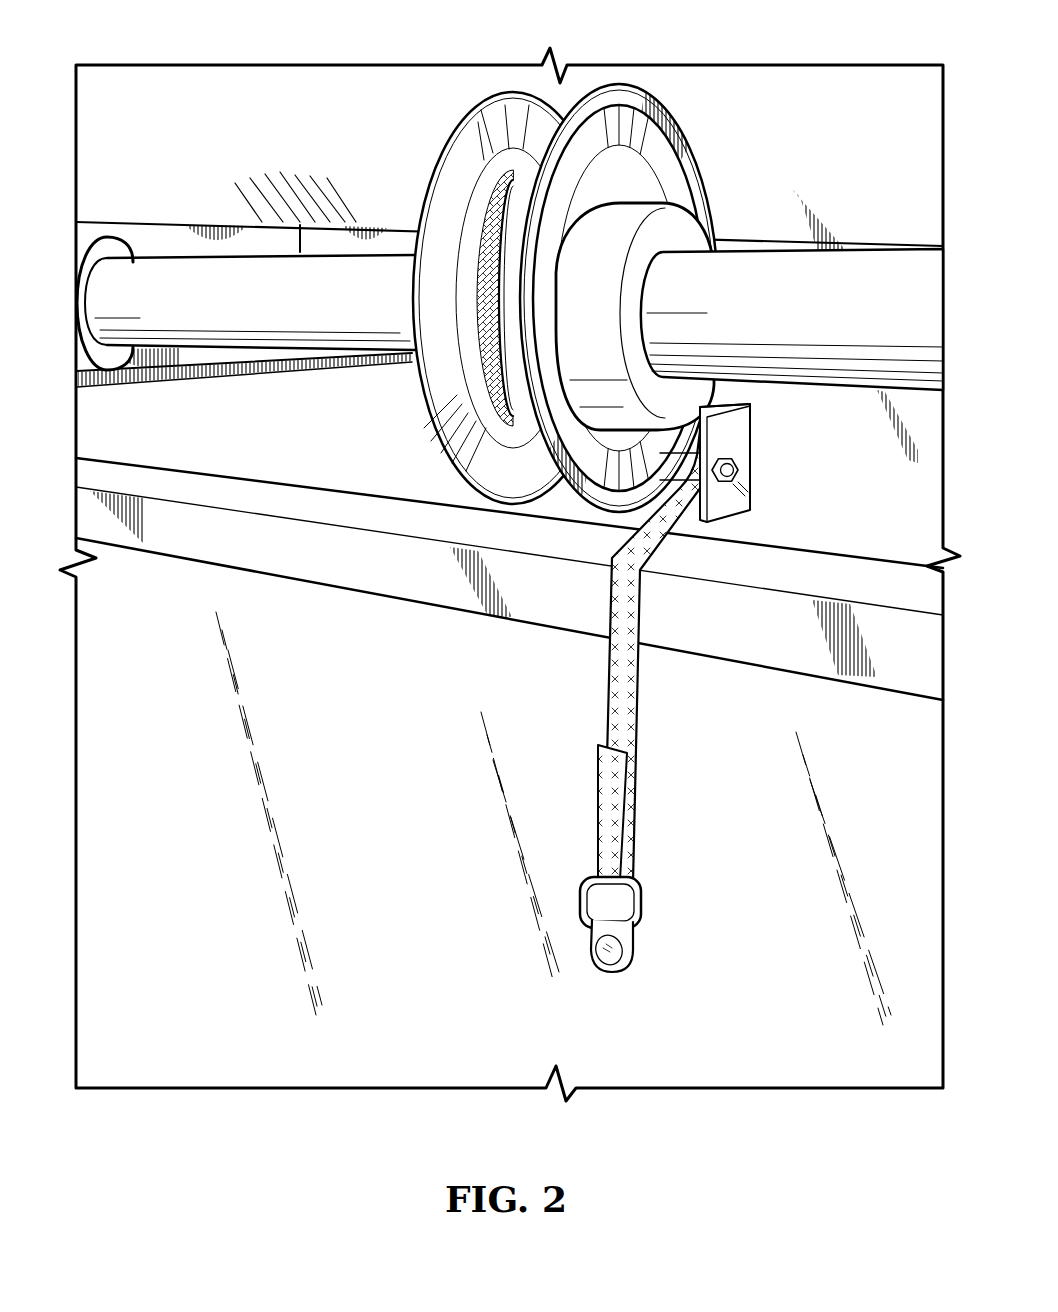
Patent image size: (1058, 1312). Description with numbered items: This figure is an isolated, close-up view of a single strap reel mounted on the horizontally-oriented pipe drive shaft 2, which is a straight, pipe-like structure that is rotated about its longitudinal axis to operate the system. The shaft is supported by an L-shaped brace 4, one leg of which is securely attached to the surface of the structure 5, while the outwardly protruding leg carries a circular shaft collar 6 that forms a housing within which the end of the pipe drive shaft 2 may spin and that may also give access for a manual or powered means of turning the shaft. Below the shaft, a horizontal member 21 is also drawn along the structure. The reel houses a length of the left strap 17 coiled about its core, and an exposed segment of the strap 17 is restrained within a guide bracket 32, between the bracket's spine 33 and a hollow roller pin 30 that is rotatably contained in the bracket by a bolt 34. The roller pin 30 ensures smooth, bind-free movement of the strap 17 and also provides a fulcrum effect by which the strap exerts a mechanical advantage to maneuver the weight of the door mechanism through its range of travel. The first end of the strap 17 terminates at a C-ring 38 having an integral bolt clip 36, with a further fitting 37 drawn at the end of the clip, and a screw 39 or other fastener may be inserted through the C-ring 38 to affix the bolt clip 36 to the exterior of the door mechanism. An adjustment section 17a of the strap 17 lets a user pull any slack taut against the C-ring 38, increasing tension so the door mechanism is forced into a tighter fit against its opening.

The pipe drive shaft 2 is at (256, 327).
The L-shaped brace 4 is at (150, 228).
The structure 5 is at (315, 170).
The circular shaft collar 6 is at (92, 255).
The left strap 17 is at (478, 372).
The adjustment section 17a is at (617, 786).
The rail 21 is at (264, 500).
The roller pin 30 is at (693, 470).
The guide bracket 32 is at (778, 454).
The spine 33 is at (708, 410).
The bolt 34 is at (738, 479).
The bolt clip 36 is at (637, 953).
The hook 37 is at (617, 966).
The C-ring 38 is at (640, 893).
The screw 39 is at (590, 296).